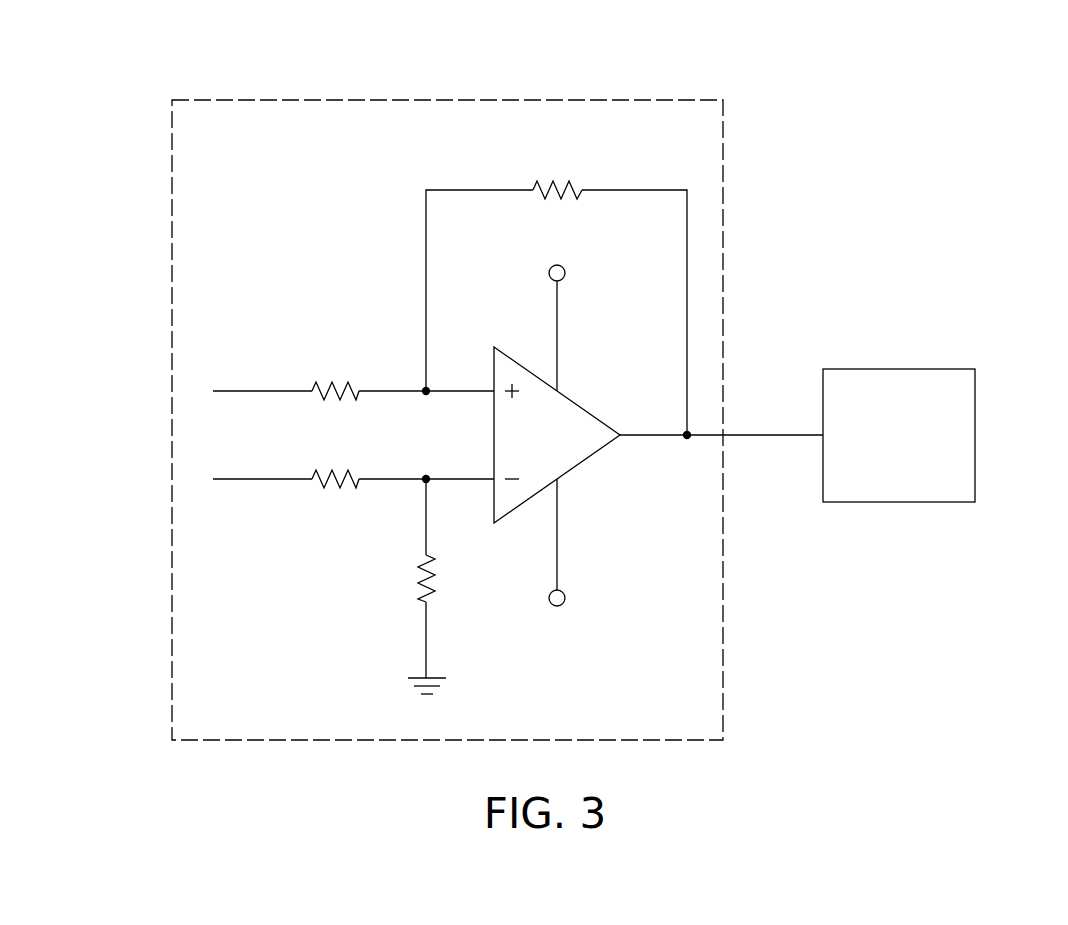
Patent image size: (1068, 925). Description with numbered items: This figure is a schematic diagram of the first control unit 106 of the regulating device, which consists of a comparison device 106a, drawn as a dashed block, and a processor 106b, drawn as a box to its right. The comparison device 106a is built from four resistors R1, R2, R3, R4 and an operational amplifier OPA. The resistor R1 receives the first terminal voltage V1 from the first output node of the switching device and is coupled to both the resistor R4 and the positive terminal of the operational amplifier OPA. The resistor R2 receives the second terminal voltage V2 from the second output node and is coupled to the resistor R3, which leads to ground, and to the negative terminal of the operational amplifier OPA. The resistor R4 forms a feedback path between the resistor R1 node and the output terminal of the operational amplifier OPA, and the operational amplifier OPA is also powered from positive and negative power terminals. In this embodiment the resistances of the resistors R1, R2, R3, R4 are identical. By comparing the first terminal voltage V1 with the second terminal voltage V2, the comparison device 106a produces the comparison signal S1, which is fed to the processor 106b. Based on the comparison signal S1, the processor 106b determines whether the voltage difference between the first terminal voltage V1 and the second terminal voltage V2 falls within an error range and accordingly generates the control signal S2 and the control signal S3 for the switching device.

The first control unit 106 is at (73, 58).
The comparison device 106a is at (172, 100).
The processor 106b is at (823, 369).
The resistor R1 is at (331, 381).
The resistor R2 is at (340, 495).
The resistor R3 is at (417, 585).
The resistor R4 is at (551, 178).
The operational amplifier OPA is at (585, 406).
The first terminal voltage V1 is at (297, 380).
The second terminal voltage V2 is at (297, 468).
The comparison signal S1 is at (810, 424).
The control signal S2 is at (975, 410).
The control signal S3 is at (975, 460).